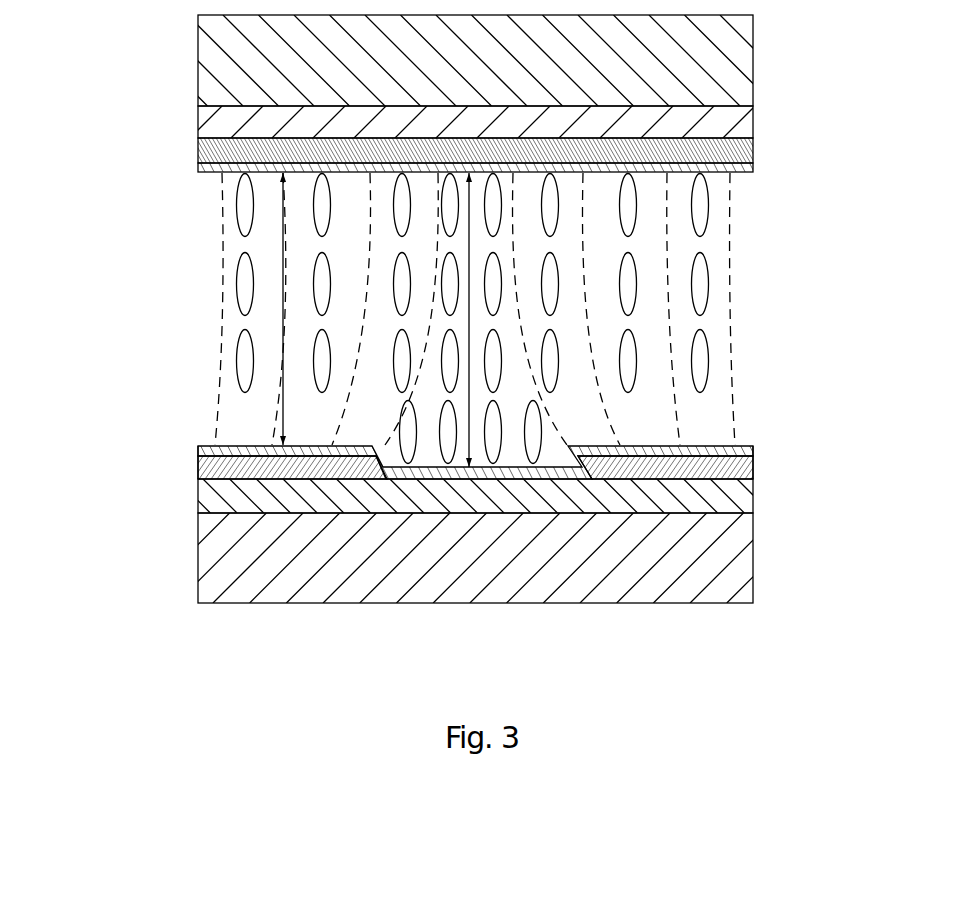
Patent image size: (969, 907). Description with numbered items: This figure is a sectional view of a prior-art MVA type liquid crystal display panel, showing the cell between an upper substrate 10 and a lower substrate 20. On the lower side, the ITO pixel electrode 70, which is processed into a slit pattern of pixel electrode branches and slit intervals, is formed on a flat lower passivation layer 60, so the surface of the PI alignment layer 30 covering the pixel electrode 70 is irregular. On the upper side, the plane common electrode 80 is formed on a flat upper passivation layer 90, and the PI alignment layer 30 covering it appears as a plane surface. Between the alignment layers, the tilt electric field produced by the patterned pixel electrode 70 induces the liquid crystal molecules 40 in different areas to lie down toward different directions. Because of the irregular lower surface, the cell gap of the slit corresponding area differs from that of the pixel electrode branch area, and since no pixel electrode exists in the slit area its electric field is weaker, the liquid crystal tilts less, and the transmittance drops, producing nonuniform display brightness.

The upper substrate 10 is at (198, 83).
The lower substrate 20 is at (198, 567).
The PI alignment layer 30 is at (200, 447).
The liquid crystal molecules 40 is at (697, 289).
The lower passivation layer 60 is at (715, 503).
The ITO pixel electrode 70 is at (730, 465).
The common electrode 80 is at (687, 147).
The upper passivation layer 90 is at (687, 125).